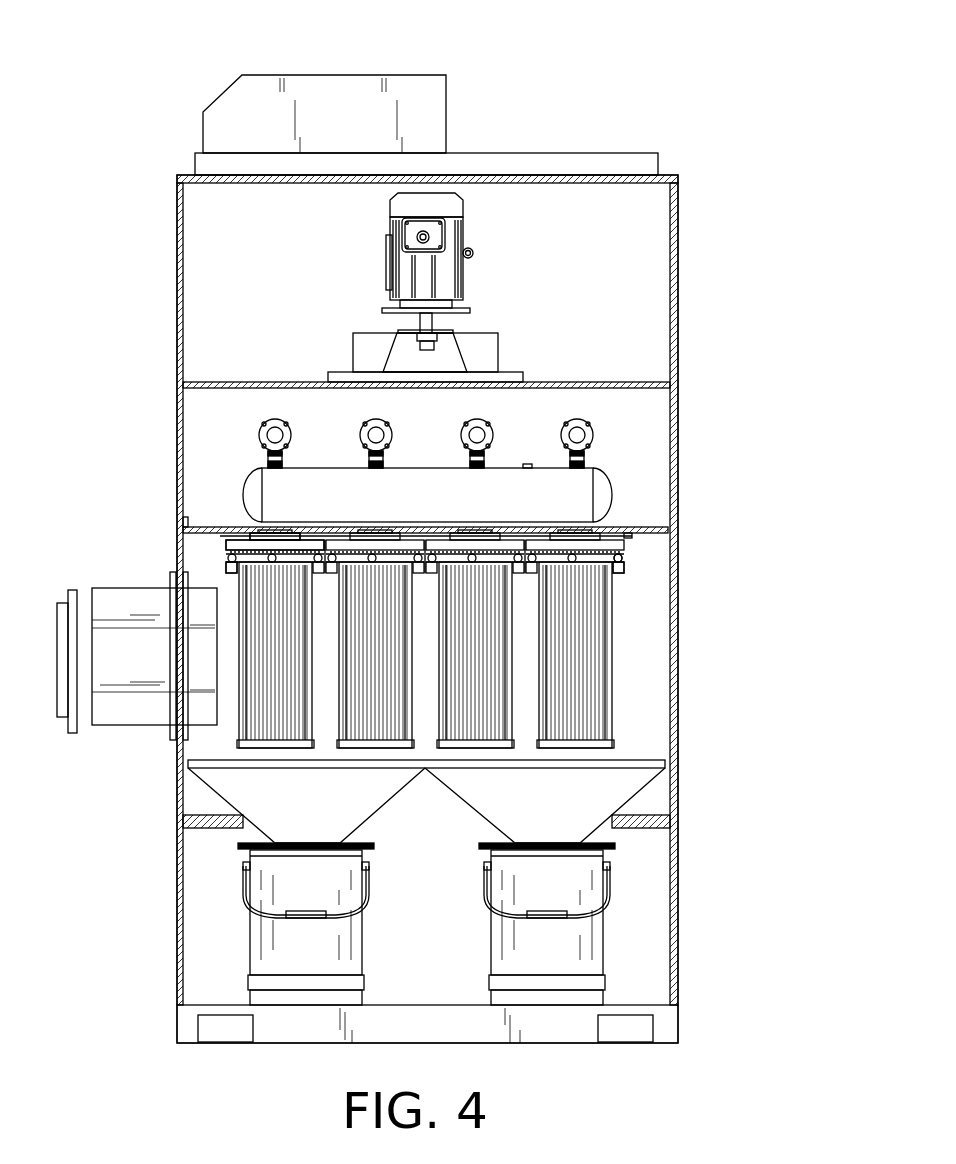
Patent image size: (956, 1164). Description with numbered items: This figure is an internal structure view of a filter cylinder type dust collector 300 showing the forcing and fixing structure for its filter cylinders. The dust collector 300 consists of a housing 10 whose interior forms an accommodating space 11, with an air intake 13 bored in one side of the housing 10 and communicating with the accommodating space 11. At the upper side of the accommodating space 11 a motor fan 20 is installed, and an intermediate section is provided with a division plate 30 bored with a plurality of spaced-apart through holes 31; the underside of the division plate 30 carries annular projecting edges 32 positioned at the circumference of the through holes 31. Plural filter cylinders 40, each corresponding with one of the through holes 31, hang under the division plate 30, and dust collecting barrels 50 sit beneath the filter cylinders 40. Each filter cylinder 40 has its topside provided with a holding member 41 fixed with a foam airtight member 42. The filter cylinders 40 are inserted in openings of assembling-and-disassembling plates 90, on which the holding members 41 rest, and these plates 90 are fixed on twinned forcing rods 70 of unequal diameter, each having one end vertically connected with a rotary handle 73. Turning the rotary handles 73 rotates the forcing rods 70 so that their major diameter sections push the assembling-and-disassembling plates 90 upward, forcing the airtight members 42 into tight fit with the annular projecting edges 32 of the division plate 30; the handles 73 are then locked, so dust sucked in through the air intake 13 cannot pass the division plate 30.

The dust collector 300 is at (700, 147).
The housing 10 is at (680, 253).
The accommodating space 11 is at (220, 124).
The motor fan 20 is at (458, 194).
The through hole 31 is at (582, 530).
The division plate 30 is at (650, 518).
The annular projecting edge 32 is at (628, 537).
The filter cylinder 40 is at (650, 706).
The holding member 41 is at (230, 542).
The airtight member 42 is at (250, 535).
The assembling-and-disassembling plate 90 is at (204, 542).
The forcing rod 70 is at (642, 559).
The rotary handle 73 is at (600, 558).
The air intake 13 is at (132, 707).
The dust collecting barrel 50 is at (650, 936).